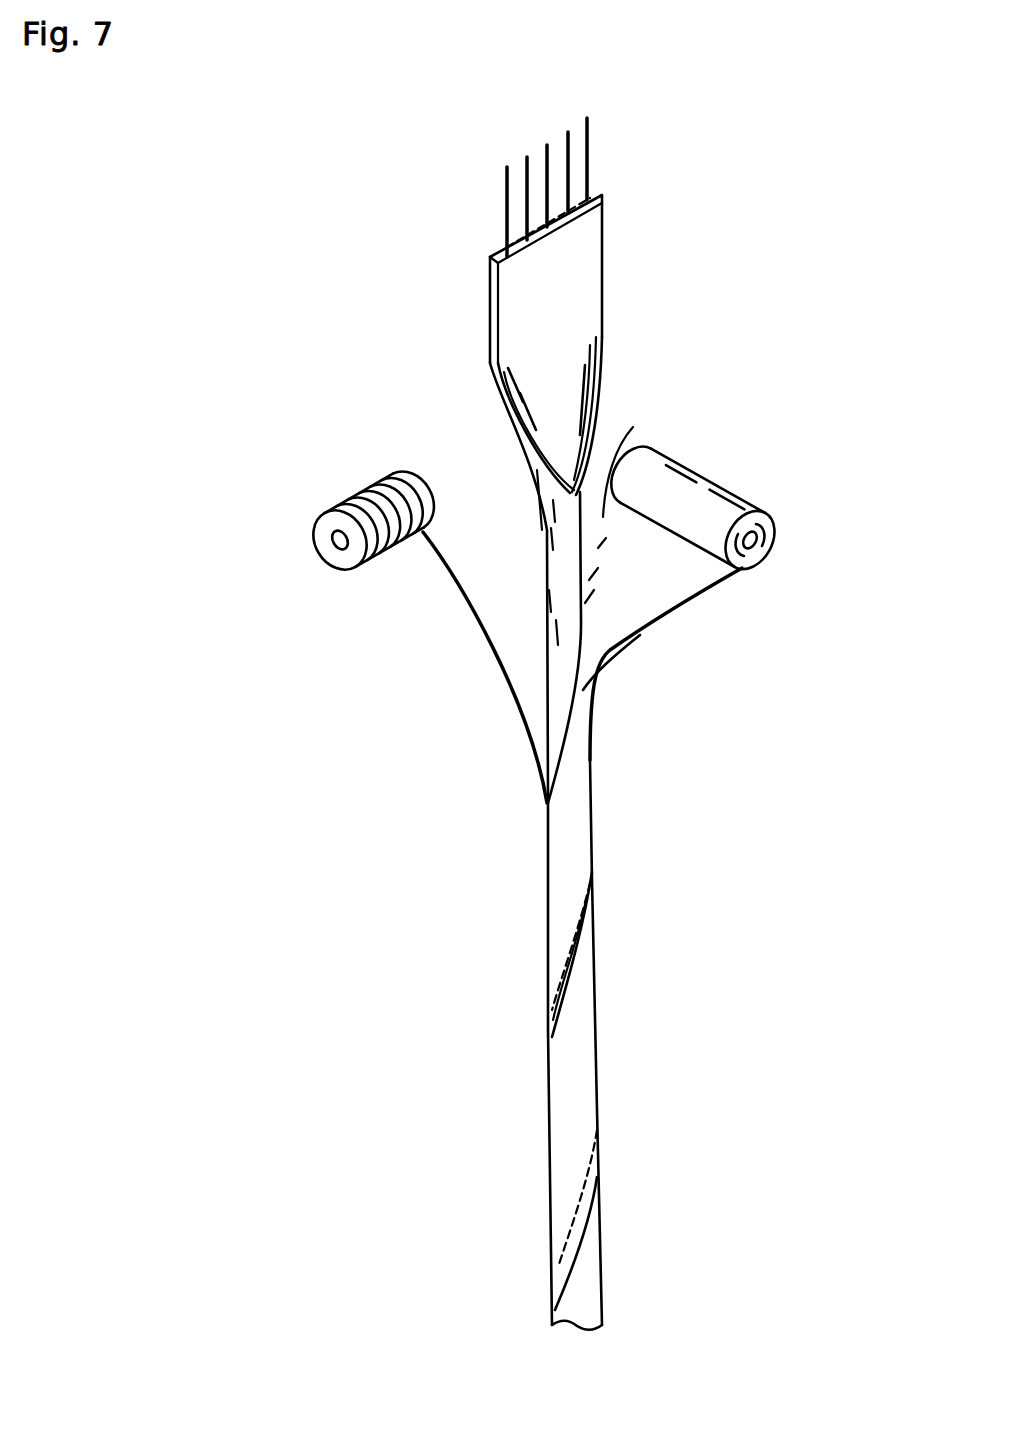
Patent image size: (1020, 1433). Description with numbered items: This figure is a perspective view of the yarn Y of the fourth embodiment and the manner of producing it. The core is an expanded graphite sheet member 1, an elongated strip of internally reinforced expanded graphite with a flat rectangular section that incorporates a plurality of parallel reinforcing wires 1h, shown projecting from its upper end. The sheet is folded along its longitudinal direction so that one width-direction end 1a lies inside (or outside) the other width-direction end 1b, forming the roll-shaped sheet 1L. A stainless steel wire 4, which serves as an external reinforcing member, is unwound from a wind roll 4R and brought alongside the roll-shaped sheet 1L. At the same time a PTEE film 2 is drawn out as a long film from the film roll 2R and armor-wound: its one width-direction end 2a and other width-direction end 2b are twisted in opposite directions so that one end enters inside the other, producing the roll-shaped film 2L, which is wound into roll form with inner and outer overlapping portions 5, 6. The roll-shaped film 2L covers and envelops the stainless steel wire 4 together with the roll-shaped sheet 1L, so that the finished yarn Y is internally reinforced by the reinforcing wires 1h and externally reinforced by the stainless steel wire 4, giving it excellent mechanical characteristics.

The expanded graphite sheet member 1 is at (575, 275).
The reinforcing wires 1h is at (527, 195).
The one width-direction end of the expanded graphite sheet 1a is at (607, 403).
The other width-direction end of the expanded graphite sheet 1b is at (492, 337).
The roll-shaped sheet 1L is at (545, 560).
The PTEE film 2 is at (675, 577).
The one width-direction end of the PTEE film 2a is at (573, 952).
The other width-direction end of the PTEE film 2b is at (567, 985).
The roll-shaped film 2L is at (585, 840).
The film roll 2R is at (727, 496).
The stainless steel wire 4 is at (497, 658).
The wind roll of stainless steel wire 4R is at (360, 495).
The yarn Y is at (598, 1100).
The inner overlapping portion 5 is at (577, 1213).
The outer overlapping portion 6 is at (577, 1237).